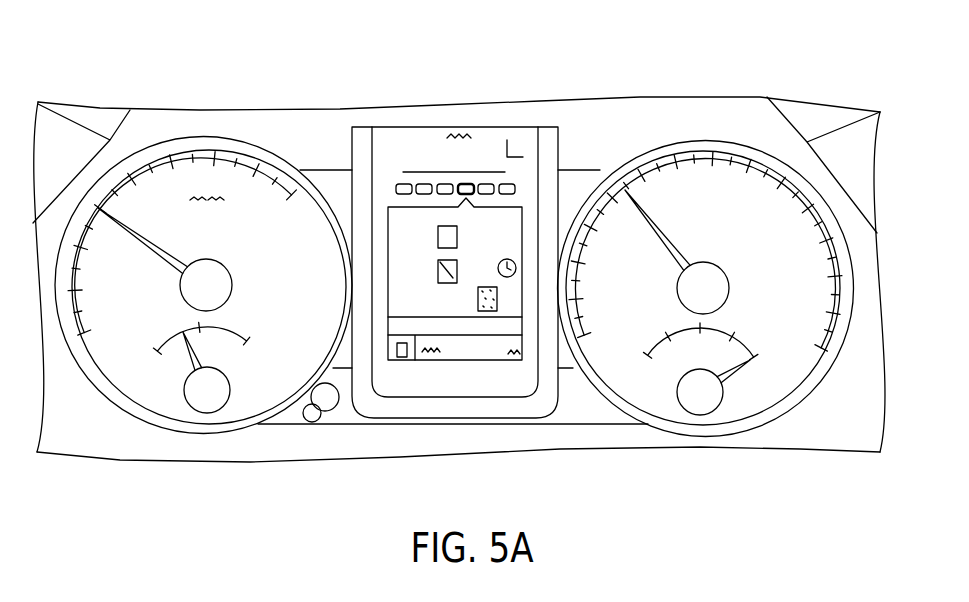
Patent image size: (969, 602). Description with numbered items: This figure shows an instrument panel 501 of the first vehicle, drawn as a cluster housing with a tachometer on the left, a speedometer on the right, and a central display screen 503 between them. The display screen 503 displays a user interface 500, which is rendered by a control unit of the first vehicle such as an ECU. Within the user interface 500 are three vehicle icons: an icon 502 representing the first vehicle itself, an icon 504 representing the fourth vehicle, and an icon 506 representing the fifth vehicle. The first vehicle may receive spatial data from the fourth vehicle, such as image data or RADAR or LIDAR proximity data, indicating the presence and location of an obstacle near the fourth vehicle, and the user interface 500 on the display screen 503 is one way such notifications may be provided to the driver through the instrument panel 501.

The user interface 500 is at (367, 98).
The instrument panel 501 is at (169, 98).
The icon 502 is at (452, 238).
The display screen 503 is at (495, 127).
The icon 504 is at (447, 283).
The icon 506 is at (492, 311).